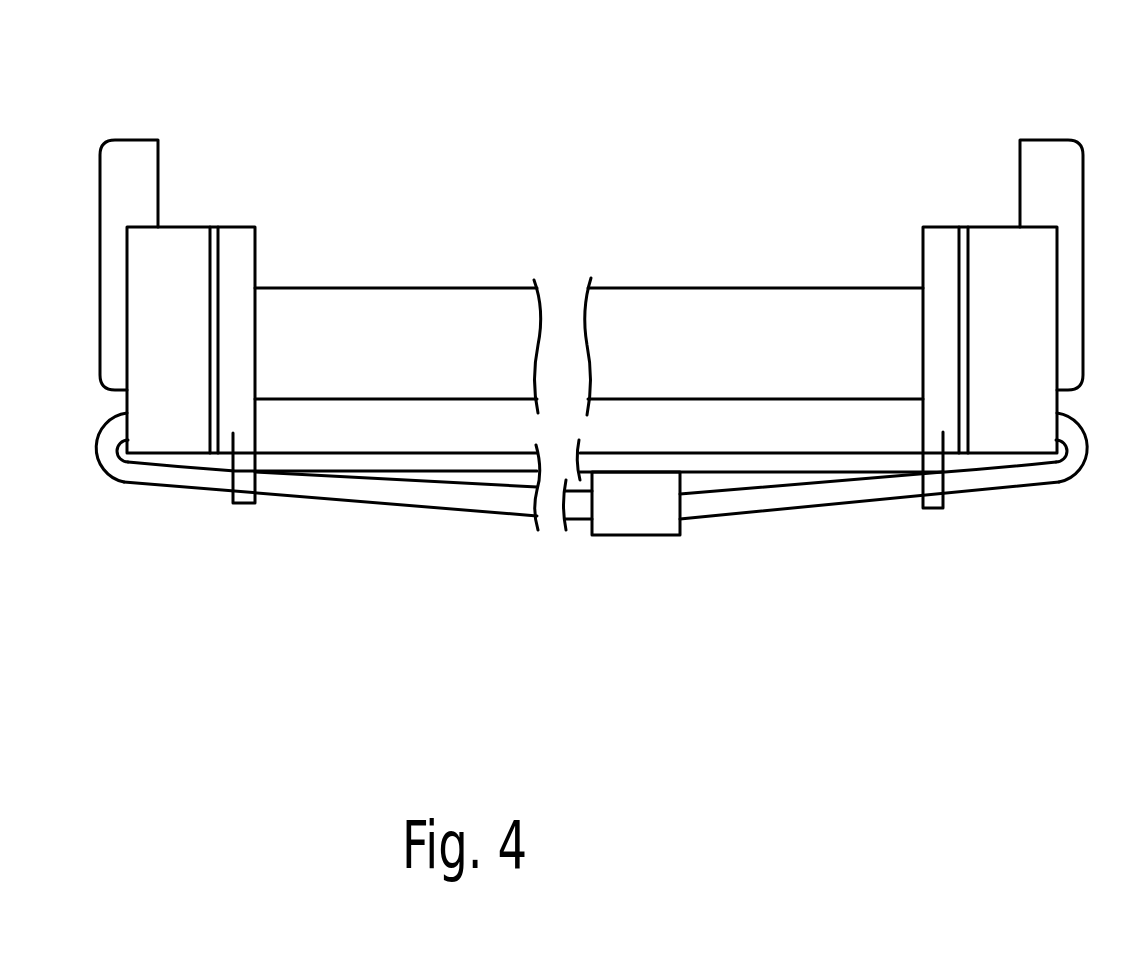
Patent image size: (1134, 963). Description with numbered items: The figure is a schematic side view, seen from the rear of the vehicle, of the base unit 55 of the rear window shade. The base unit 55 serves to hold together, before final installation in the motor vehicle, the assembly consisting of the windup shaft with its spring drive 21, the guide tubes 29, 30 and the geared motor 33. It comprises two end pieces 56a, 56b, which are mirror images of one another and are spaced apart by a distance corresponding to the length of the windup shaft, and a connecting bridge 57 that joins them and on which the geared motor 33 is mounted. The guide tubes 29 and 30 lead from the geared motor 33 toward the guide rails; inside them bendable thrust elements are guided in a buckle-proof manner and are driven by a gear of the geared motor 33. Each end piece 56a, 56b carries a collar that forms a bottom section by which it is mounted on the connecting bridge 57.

The base unit 55 is at (591, 364).
The end piece 56a is at (246, 266).
The end piece 56b is at (943, 270).
The spring drive 21 is at (408, 368).
The connecting bridge 57 is at (853, 462).
The guide tube 29 is at (378, 492).
The guide tube 30 is at (794, 506).
The geared motor 33 is at (633, 537).